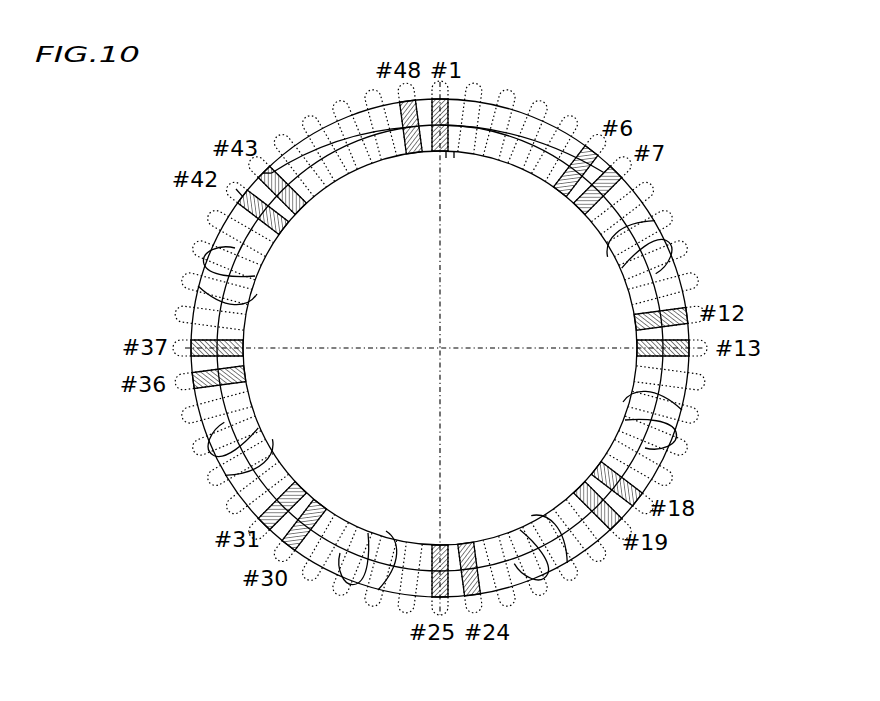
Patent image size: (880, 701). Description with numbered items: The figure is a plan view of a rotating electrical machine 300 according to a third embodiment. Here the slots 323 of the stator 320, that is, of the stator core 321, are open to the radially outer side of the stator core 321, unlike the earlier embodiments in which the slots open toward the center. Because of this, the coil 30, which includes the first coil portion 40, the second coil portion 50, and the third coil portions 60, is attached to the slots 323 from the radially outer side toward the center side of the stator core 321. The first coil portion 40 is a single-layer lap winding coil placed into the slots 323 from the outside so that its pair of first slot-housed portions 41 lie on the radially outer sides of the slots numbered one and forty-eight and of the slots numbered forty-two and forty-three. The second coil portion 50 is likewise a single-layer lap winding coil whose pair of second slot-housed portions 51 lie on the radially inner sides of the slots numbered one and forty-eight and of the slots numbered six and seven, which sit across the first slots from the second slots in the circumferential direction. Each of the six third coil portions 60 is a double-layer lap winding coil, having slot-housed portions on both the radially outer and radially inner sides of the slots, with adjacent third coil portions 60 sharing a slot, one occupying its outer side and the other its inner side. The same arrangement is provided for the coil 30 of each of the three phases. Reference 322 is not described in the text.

The coil 30 is at (298, 108).
The first coil portion 40 is at (352, 118).
The first slot-housed portions 41 is at (268, 158).
The second coil portion 50 is at (532, 136).
The second slot-housed portions 51 is at (446, 154).
The third coil portions 60 is at (684, 412).
The rotating electrical machine 300 is at (698, 106).
The stator 320 is at (440, 348).
The stator core 321 is at (358, 152).
The tooth 322 is at (488, 104).
The slots 323 is at (471, 96).